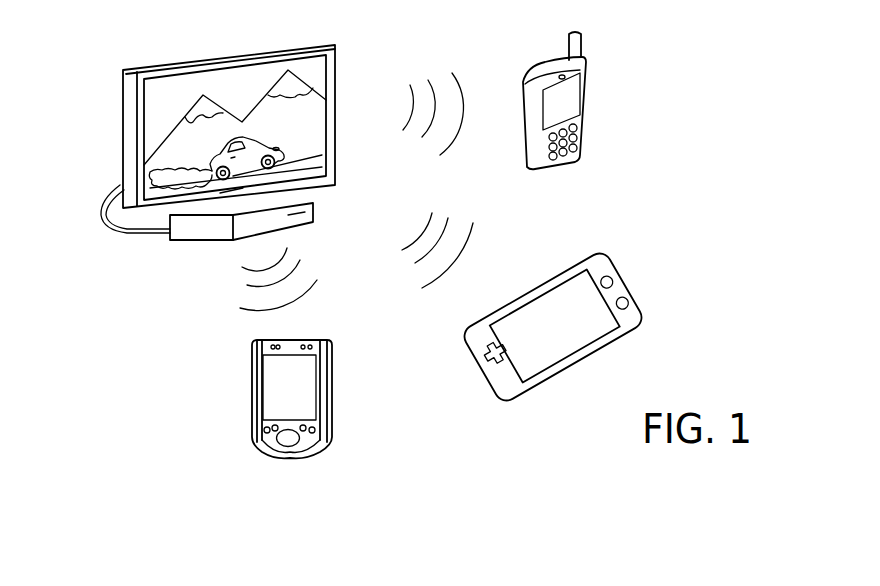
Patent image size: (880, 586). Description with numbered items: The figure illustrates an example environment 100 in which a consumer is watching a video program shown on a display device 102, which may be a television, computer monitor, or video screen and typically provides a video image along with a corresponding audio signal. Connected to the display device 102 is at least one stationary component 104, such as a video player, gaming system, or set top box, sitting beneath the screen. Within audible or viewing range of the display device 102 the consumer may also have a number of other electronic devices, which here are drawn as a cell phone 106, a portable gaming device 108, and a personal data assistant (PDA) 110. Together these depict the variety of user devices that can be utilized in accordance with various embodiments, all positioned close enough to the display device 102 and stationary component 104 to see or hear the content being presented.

The environment 100 is at (744, 90).
The display device 102 is at (123, 130).
The stationary component 104 is at (170, 238).
The cell phone 106 is at (587, 110).
The portable gaming device 108 is at (642, 313).
The personal data assistant (PDA) 110 is at (252, 368).